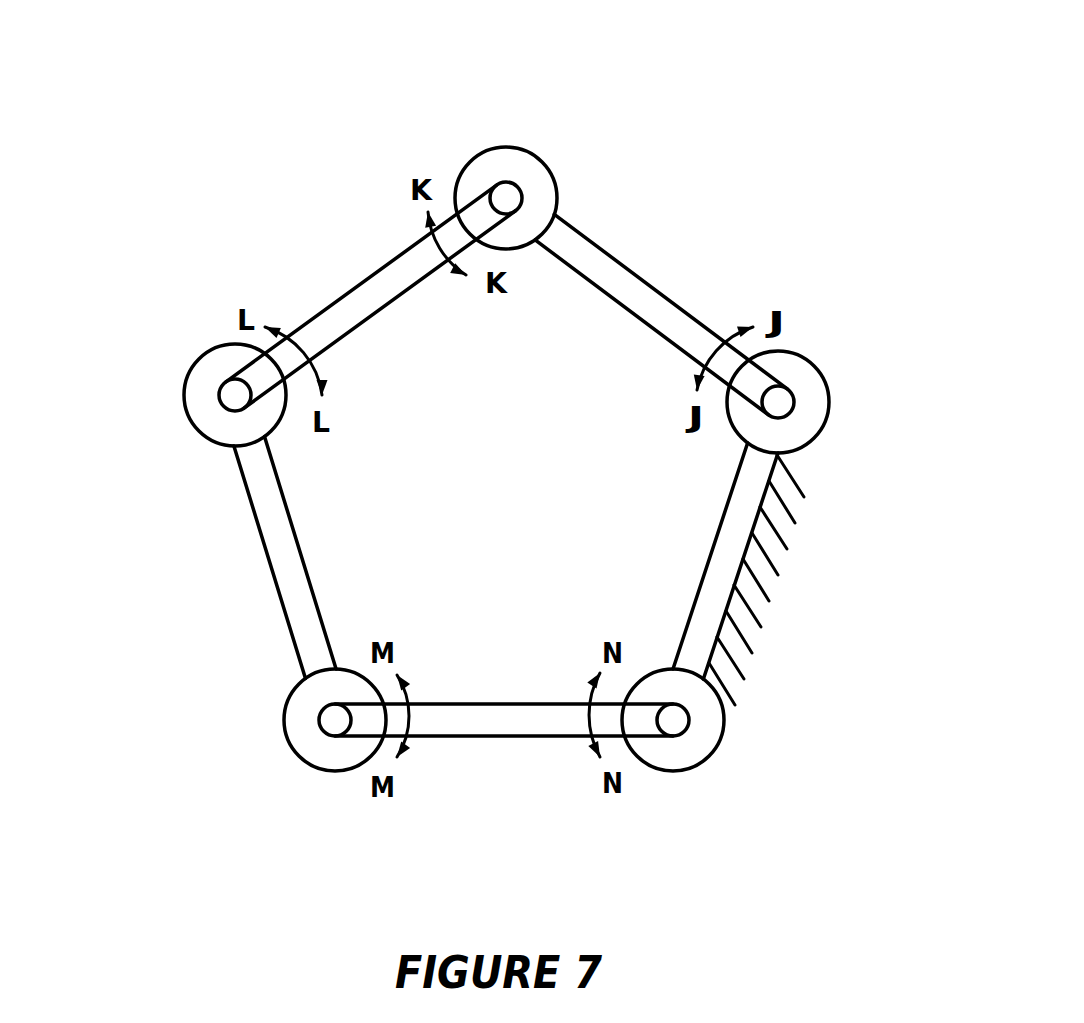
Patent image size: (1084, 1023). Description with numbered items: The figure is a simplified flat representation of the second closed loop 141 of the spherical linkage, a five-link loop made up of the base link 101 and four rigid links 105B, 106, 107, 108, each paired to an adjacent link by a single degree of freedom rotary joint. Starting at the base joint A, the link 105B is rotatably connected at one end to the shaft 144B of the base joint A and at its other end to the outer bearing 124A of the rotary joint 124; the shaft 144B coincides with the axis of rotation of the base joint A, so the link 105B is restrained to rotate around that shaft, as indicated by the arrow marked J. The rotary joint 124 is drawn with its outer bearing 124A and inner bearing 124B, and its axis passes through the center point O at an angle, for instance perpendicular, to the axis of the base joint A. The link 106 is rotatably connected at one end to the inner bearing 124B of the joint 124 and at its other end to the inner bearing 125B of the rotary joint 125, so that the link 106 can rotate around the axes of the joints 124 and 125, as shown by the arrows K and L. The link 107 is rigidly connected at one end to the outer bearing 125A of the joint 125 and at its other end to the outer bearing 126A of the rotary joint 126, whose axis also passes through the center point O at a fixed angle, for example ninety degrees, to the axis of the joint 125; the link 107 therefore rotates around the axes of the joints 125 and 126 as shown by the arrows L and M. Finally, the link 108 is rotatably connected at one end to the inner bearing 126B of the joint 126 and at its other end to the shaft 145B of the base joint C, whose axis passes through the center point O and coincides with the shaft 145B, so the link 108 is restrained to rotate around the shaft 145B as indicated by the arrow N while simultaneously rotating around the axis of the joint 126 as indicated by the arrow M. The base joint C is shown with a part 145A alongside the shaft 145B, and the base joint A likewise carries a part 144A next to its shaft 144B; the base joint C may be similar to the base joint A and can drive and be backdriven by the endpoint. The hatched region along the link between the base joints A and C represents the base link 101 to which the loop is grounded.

The second closed loop 141 is at (533, 50).
The rotary joint 124 is at (514, 146).
The outer bearing 124A is at (557, 185).
The inner bearing 124B is at (497, 170).
The rotary joint 125 is at (176, 392).
The outer bearing 125A is at (190, 370).
The inner bearing 125B is at (220, 446).
The joint inner pin 144A is at (825, 423).
The shaft 144B is at (805, 375).
The rotary joint 126 is at (290, 758).
The outer bearing 126A is at (285, 718).
The inner bearing 126B is at (335, 735).
The joint outer member 145A is at (719, 720).
The shaft 145B is at (678, 735).
The rigid link 106 is at (350, 300).
The rigid link 105B is at (663, 310).
The rigid link 107 is at (267, 550).
The rigid link 108 is at (505, 722).
The base link 101 is at (774, 574).
The base joint A is at (840, 395).
The base joint C is at (732, 745).